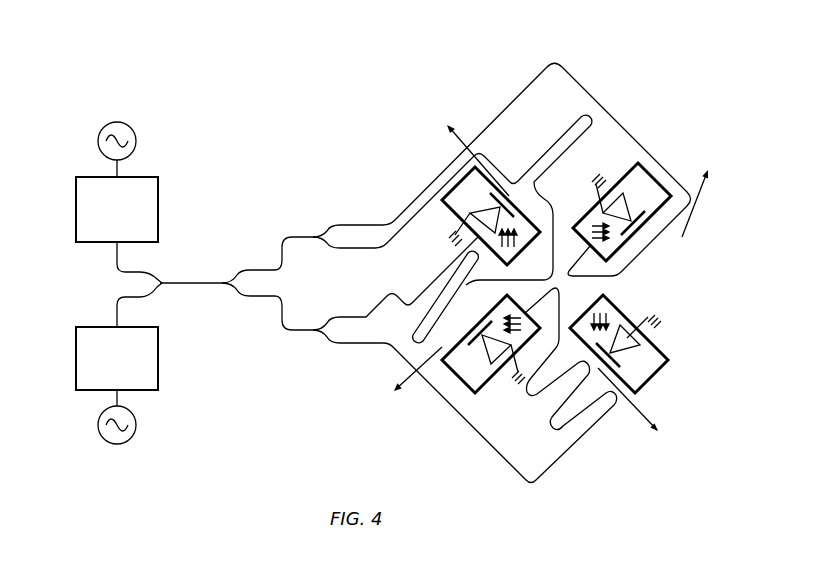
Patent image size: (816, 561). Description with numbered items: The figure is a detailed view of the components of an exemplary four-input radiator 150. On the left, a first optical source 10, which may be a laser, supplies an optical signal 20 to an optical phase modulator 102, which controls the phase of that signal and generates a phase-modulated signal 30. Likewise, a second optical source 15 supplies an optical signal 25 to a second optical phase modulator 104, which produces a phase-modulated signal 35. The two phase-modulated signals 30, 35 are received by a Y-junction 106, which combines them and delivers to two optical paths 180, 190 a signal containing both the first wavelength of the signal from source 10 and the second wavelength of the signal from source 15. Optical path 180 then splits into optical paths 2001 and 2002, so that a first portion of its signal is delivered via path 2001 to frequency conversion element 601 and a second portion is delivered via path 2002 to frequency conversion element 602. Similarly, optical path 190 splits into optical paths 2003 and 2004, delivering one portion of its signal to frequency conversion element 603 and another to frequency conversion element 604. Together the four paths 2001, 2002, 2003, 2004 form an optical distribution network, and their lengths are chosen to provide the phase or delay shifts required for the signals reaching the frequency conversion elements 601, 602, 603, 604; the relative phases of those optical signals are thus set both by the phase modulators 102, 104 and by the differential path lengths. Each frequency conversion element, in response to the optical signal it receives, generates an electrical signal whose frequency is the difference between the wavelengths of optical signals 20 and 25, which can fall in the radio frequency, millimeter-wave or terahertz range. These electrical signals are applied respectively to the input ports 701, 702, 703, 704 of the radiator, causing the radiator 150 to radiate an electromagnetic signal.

The four-input radiator 150 is at (144, 77).
The optical source 10 is at (100, 140).
The optical source 15 is at (99, 431).
The optical signal 20 is at (114, 165).
The optical signal 25 is at (114, 401).
The phase-modulated signal 30 is at (114, 254).
The phase-modulated signal 35 is at (114, 317).
The phase modulator/control block 102 is at (76, 212).
The phase modulator/control block 104 is at (76, 358).
The Y-junction 106 is at (193, 283).
The optical path 180 is at (255, 270).
The optical path 190 is at (255, 297).
The optical path 2001 is at (345, 222).
The optical path 2002 is at (345, 250).
The optical path 2003 is at (347, 316).
The optical path 2004 is at (345, 345).
The frequency conversion element 601 is at (583, 213).
The frequency conversion element 602 is at (457, 214).
The frequency conversion element 603 is at (486, 384).
The frequency conversion element 604 is at (618, 308).
The input port 701 is at (464, 130).
The input port 702 is at (691, 194).
The input port 703 is at (643, 413).
The input port 704 is at (410, 382).